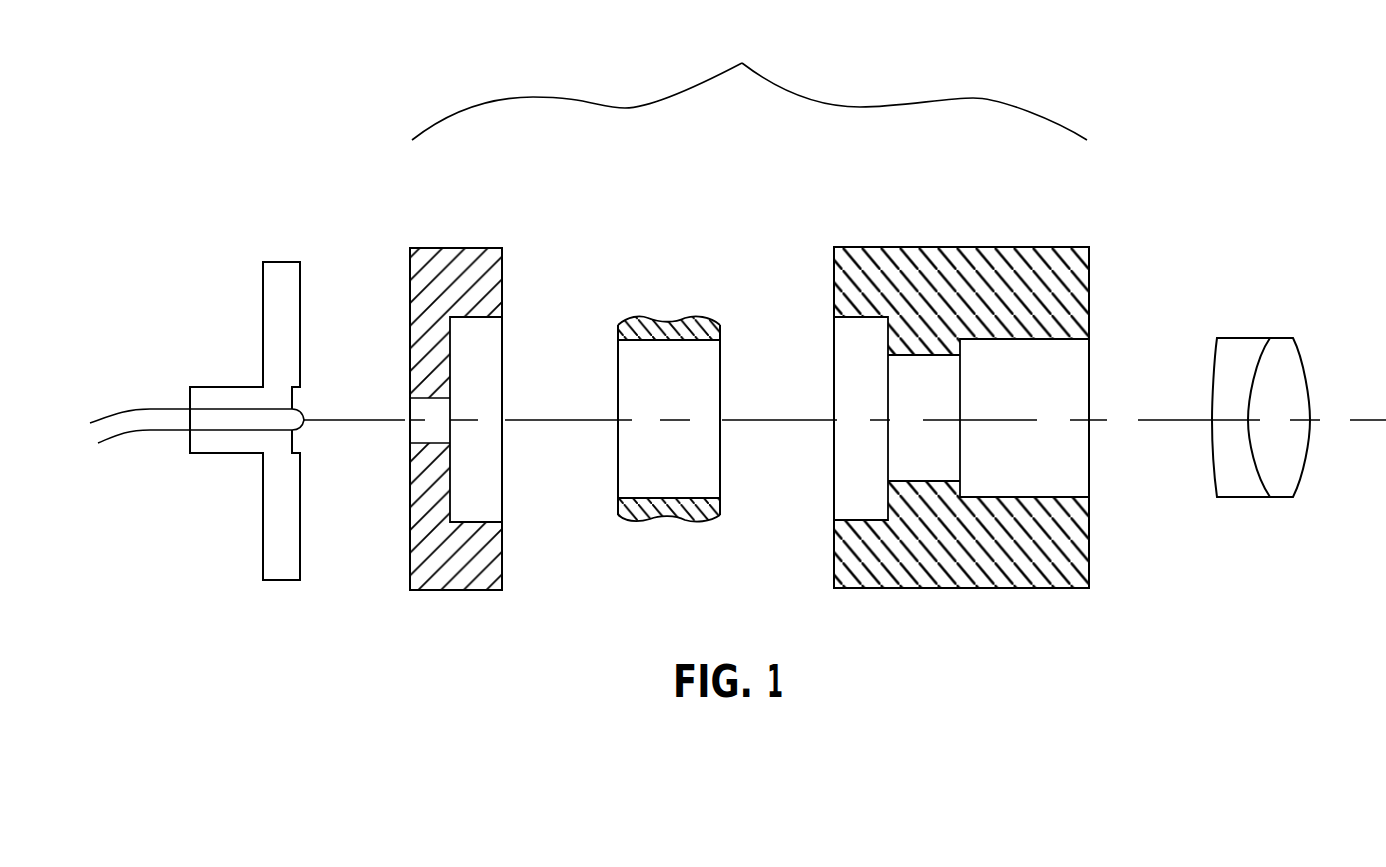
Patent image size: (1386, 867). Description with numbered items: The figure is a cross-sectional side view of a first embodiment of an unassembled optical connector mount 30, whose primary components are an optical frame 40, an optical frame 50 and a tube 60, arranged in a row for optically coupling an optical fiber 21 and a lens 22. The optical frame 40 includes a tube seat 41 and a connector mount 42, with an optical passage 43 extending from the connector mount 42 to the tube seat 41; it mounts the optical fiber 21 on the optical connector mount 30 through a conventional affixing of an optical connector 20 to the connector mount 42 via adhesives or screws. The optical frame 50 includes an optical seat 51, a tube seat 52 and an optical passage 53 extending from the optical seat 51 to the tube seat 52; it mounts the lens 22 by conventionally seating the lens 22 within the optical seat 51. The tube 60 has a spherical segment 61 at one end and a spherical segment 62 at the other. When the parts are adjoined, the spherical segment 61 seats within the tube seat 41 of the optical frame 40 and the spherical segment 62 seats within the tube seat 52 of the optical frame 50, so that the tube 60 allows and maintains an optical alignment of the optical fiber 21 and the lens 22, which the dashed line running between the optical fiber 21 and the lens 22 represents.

The optical connector 20 is at (282, 231).
The optical fiber 21 is at (304, 427).
The lens 22 is at (1303, 368).
The optical connector mount 30 is at (749, 86).
The optical frame 40 is at (456, 221).
The tube seat 41 is at (493, 482).
The connector mount 42 is at (428, 545).
The optical passage 43 is at (428, 410).
The optical frame 50 is at (954, 221).
The optical seat 51 is at (1073, 484).
The tube seat 52 is at (848, 478).
The optical passage 53 is at (902, 365).
The tube 60 is at (666, 419).
The spherical segment 61 is at (632, 518).
The spherical segment 62 is at (710, 519).